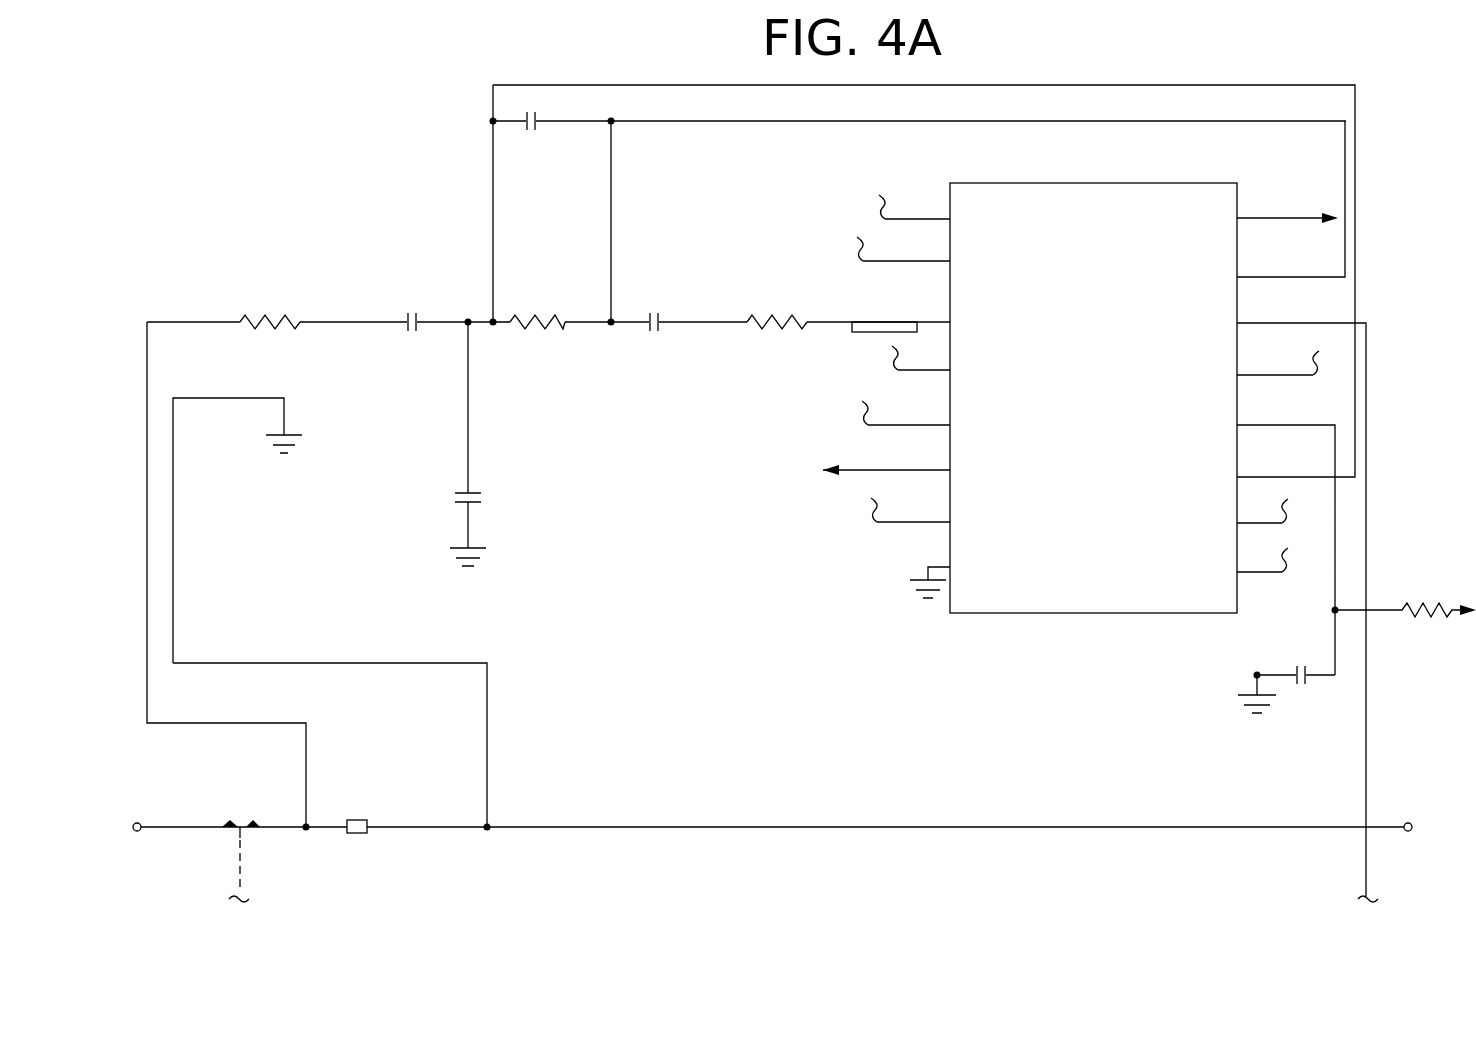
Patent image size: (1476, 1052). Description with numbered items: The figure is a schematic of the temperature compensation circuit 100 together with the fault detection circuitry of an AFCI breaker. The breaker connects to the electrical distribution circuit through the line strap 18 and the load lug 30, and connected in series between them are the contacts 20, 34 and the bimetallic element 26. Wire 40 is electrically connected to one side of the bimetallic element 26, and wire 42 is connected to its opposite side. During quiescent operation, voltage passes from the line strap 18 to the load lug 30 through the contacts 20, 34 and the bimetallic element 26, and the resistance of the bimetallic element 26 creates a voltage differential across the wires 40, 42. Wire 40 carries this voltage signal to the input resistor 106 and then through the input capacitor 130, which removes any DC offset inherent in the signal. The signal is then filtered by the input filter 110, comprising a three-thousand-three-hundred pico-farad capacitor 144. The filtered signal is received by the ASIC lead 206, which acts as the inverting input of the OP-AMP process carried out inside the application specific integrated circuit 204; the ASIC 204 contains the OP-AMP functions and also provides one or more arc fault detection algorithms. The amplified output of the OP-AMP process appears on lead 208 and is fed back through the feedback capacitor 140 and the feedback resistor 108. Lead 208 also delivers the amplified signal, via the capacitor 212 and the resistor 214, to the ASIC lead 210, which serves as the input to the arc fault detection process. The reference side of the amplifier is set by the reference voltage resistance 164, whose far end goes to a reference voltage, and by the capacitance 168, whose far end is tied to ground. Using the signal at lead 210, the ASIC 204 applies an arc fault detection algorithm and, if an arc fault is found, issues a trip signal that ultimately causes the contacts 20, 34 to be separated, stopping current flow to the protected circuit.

The temperature compensation circuit 100 is at (380, 182).
The input resistor 106 is at (272, 318).
The feedback resistor 108 is at (540, 318).
The input filter 110 is at (430, 440).
The input capacitor 130 is at (414, 333).
The feedback capacitor 140 is at (531, 112).
The capacitor 144 is at (518, 444).
The reference voltage resistance 164 is at (1410, 590).
The capacitance 168 is at (1278, 672).
The line strap 18 is at (145, 854).
The contact 20 is at (232, 822).
The application specific integrated circuit 204 is at (1078, 613).
The ASIC lead 206 is at (1300, 478).
The lead 208 is at (1345, 158).
The ASIC lead 210 is at (882, 334).
The capacitor 212 is at (656, 310).
The resistor 214 is at (780, 335).
The bimetallic element 26 is at (357, 835).
The load lug 30 is at (1406, 846).
The contact 34 is at (240, 836).
The wire 40 is at (148, 610).
The wire 42 is at (250, 398).